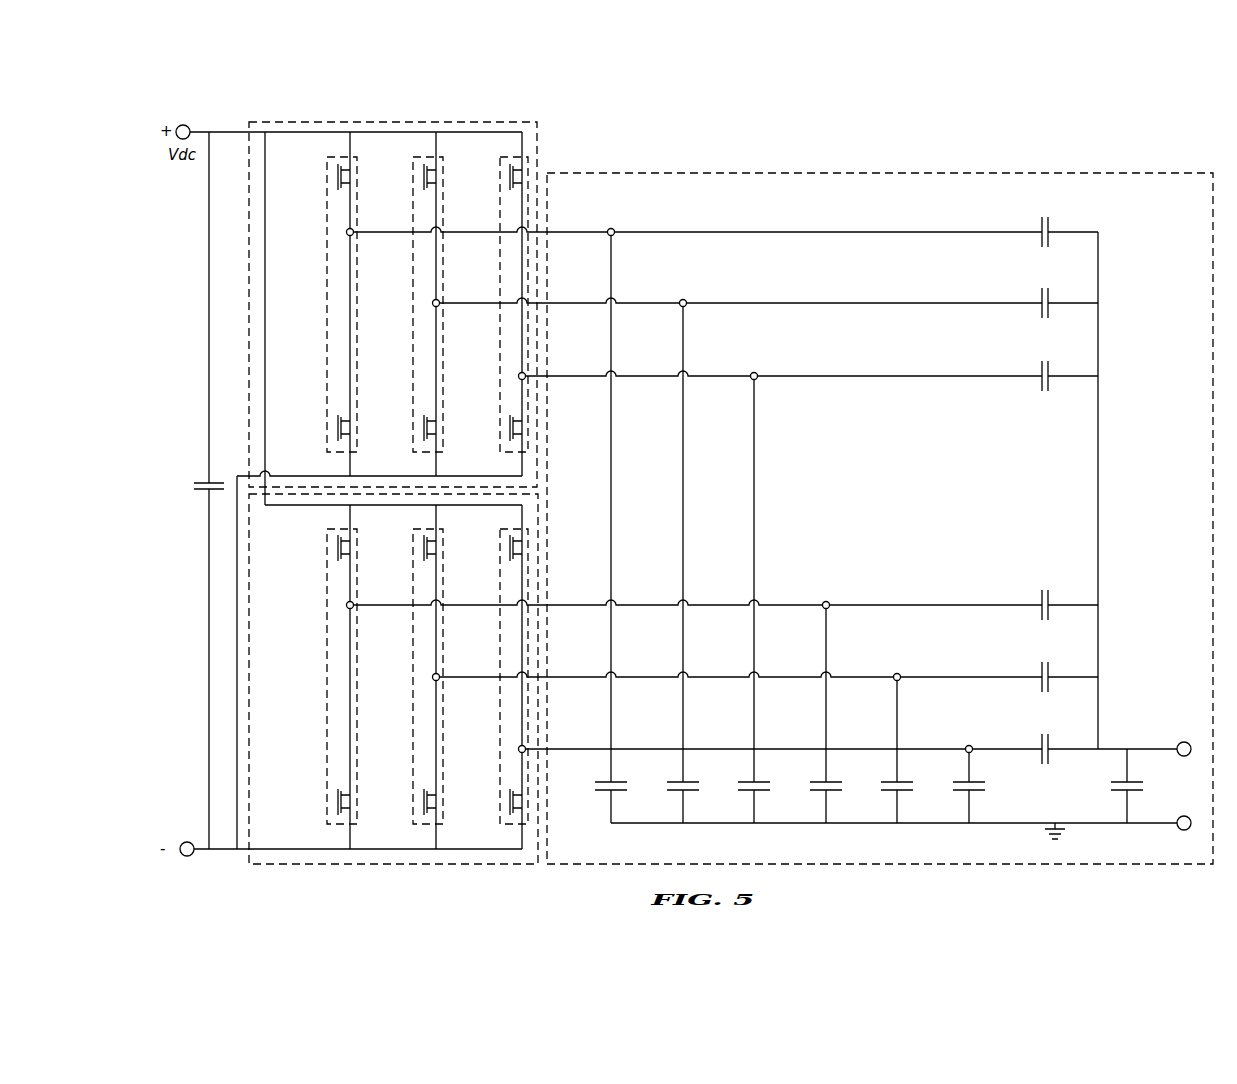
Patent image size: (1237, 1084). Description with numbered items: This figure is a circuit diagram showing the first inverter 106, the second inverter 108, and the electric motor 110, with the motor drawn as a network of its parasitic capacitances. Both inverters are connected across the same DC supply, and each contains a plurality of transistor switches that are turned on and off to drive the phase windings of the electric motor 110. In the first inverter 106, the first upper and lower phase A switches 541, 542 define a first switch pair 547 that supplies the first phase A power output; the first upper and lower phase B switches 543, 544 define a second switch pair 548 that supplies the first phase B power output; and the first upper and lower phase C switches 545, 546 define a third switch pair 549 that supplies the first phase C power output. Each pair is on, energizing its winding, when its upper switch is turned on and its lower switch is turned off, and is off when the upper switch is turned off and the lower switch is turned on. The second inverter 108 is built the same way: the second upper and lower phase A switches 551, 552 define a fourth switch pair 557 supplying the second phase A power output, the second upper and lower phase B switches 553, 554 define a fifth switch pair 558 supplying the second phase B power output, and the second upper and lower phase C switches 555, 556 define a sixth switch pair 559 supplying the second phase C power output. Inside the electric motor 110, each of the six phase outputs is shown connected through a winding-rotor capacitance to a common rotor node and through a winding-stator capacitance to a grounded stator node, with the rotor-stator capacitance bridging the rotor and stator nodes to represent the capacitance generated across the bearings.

The first inverter 106 is at (537, 139).
The second inverter 108 is at (295, 864).
The electric motor 110 is at (1160, 173).
The first upper phase A switch 541 is at (337, 177).
The first lower phase A switch 542 is at (337, 428).
The first upper phase B switch 543 is at (423, 177).
The first lower phase B switch 544 is at (423, 428).
The first upper phase C switch 545 is at (509, 177).
The first lower phase C switch 546 is at (509, 428).
The first switch pair 547 is at (327, 268).
The second switch pair 548 is at (413, 268).
The third switch pair 549 is at (500, 268).
The second upper phase A switch 551 is at (337, 548).
The second lower phase A switch 552 is at (337, 802).
The second upper phase B switch 553 is at (423, 548).
The second lower phase B switch 554 is at (423, 802).
The second upper phase C switch 555 is at (509, 548).
The second lower phase C switch 556 is at (509, 802).
The fourth switch pair 557 is at (327, 643).
The fifth switch pair 558 is at (413, 643).
The sixth switch pair 559 is at (500, 643).